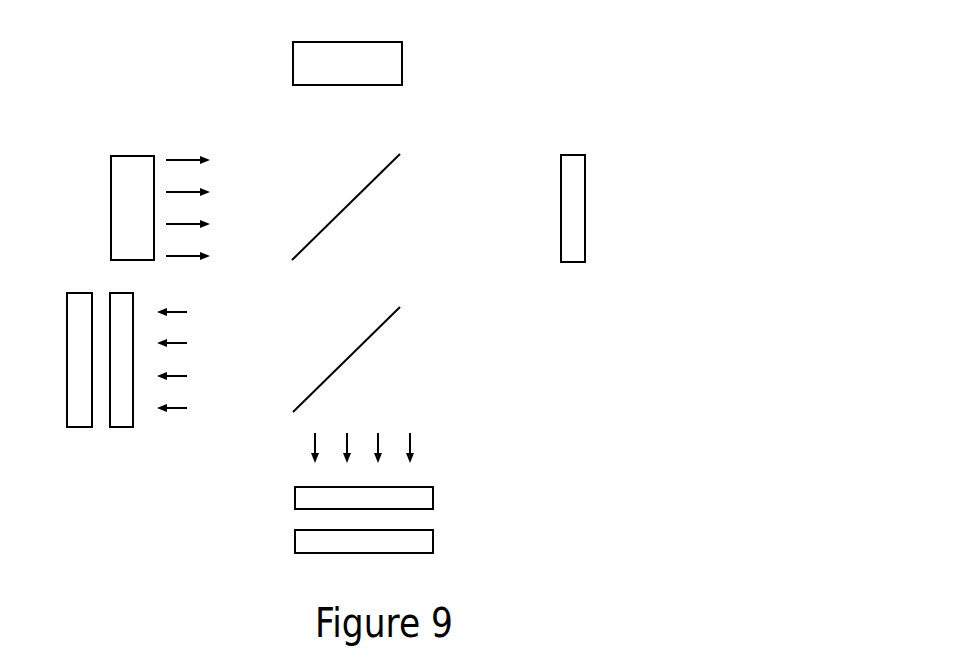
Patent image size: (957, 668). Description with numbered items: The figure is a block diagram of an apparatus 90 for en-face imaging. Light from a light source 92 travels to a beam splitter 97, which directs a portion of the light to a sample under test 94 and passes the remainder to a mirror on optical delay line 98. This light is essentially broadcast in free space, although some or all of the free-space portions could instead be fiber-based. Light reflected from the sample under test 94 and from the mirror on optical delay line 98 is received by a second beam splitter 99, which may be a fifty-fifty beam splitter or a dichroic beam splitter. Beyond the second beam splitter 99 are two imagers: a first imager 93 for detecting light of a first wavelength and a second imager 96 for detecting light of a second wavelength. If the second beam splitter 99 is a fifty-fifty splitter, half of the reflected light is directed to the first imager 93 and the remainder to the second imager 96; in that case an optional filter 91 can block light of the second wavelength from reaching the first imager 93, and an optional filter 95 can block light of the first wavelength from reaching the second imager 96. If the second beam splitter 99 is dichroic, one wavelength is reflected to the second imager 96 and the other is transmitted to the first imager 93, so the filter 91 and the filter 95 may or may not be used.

The apparatus for en-face imaging 90 is at (132, 30).
The filter 91 is at (417, 500).
The light source 92 is at (110, 203).
The first imager 93 is at (415, 547).
The sample under test 94 is at (390, 56).
The filter 95 is at (123, 420).
The second imager 96 is at (82, 420).
The beam splitter 97 is at (322, 223).
The mirror on optical delay line 98 is at (573, 164).
The second beam splitter 99 is at (373, 318).